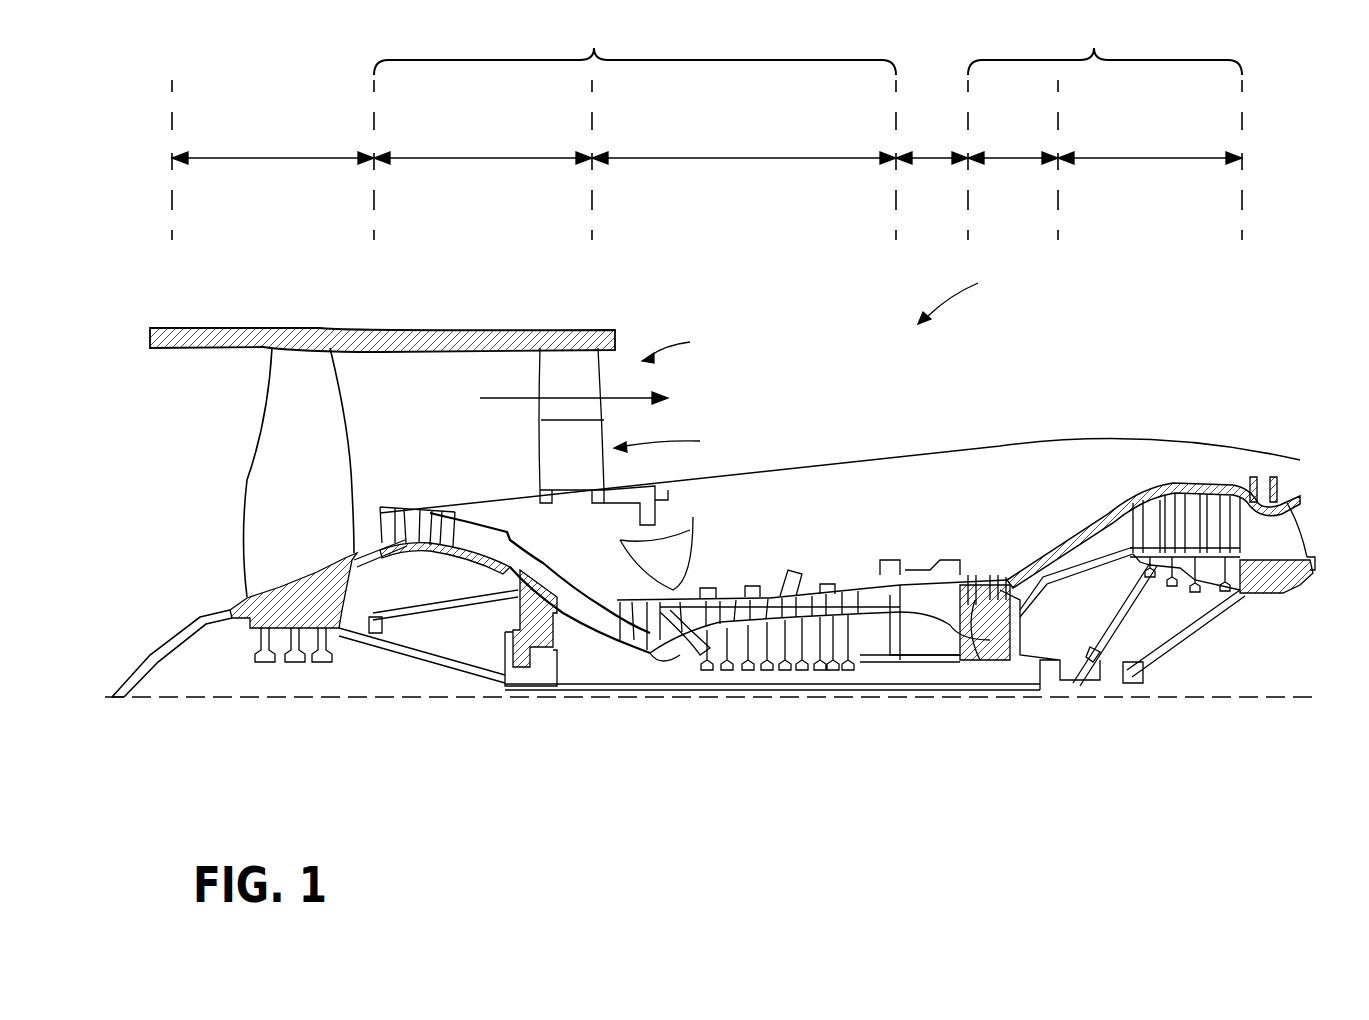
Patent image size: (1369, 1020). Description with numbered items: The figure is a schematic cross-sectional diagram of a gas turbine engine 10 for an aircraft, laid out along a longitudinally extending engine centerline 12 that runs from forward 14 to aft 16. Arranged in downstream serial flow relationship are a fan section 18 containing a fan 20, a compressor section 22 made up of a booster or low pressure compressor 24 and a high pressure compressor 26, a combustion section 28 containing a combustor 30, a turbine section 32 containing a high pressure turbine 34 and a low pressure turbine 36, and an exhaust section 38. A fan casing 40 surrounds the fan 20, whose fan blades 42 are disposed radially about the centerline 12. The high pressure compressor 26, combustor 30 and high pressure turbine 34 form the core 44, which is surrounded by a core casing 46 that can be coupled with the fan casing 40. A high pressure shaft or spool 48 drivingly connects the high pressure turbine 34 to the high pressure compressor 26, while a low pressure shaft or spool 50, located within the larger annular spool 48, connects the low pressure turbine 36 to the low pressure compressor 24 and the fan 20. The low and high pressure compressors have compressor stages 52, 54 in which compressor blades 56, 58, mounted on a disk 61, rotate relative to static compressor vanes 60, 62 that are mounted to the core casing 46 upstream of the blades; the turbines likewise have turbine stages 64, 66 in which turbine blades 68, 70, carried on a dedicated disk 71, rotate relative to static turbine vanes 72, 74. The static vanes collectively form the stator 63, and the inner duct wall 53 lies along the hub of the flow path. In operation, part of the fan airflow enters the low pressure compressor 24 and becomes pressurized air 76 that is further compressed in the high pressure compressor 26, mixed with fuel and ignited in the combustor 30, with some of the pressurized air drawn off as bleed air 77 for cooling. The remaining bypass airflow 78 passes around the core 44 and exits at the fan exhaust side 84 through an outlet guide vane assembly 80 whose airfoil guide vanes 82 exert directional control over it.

The gas turbine engine 10 is at (966, 294).
The engine centerline 12 is at (275, 698).
The forward 14 is at (118, 461).
The aft 16 is at (1331, 544).
The fan section 18 is at (273, 147).
The fan 20 is at (205, 538).
The compressor section 22 is at (635, 46).
The low pressure compressor 24 is at (483, 147).
The high pressure compressor 26 is at (744, 147).
The combustion section 28 is at (932, 142).
The combustor 30 is at (935, 600).
The turbine section 32 is at (1105, 46).
The high pressure turbine 34 is at (1013, 147).
The low pressure turbine 36 is at (1150, 147).
The exhaust section 38 is at (1312, 500).
The fan casing 40 is at (410, 327).
The fan blades 42 is at (330, 405).
The core 44 is at (870, 500).
The core casing 46 is at (1107, 507).
The HP shaft or spool 48 is at (900, 686).
The LP shaft or spool 50 is at (521, 698).
The compressor stages of the LP compressor 52 is at (437, 447).
The inner duct wall 53 is at (470, 553).
The compressor stages of the HP compressor 54 is at (760, 570).
The compressor blades 56 is at (408, 520).
The compressor blades 58 is at (668, 602).
The static compressor vanes 60 is at (392, 514).
The disk 61 is at (666, 655).
The static compressor vanes 62 is at (657, 597).
The stator 63 is at (645, 655).
The turbine stages of the HP turbine 64 is at (1035, 524).
The turbine stages of the LP turbine 66 is at (1228, 378).
The turbine blades 68 is at (985, 595).
The turbine blades 70 is at (1225, 490).
The disk 71 is at (985, 662).
The static turbine vanes 72 is at (970, 600).
The static turbine vanes 74 is at (1210, 520).
The pressurized air 76 is at (598, 612).
The bleed air 77 is at (767, 578).
The bypass airflow 78 is at (508, 393).
The outlet guide vane assembly 80 is at (673, 440).
The airfoil guide vanes 82 is at (548, 440).
The fan exhaust side 84 is at (681, 345).